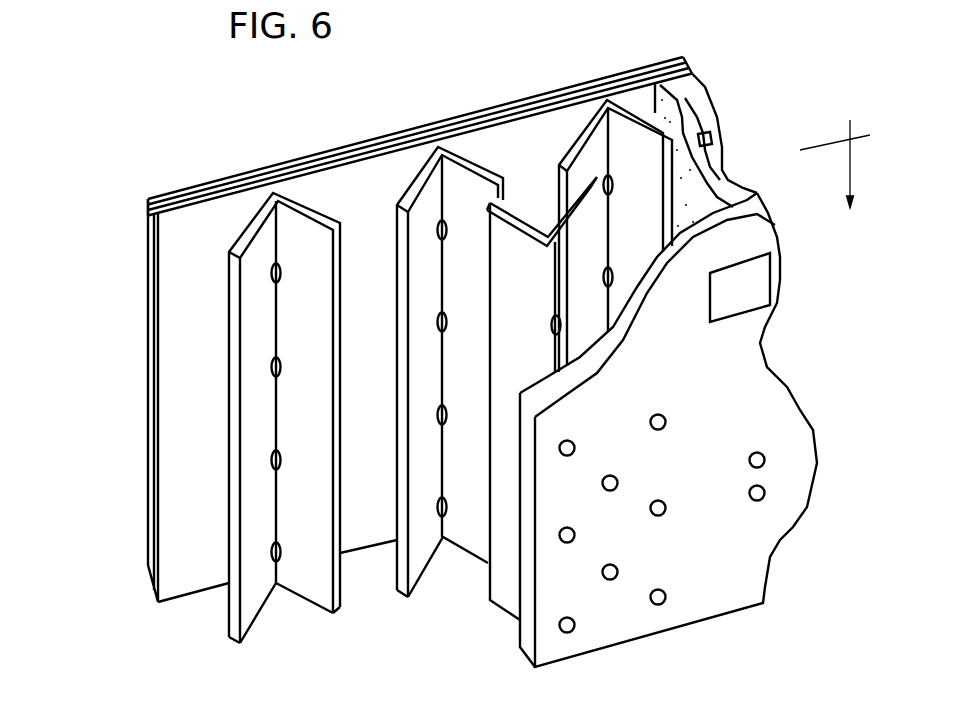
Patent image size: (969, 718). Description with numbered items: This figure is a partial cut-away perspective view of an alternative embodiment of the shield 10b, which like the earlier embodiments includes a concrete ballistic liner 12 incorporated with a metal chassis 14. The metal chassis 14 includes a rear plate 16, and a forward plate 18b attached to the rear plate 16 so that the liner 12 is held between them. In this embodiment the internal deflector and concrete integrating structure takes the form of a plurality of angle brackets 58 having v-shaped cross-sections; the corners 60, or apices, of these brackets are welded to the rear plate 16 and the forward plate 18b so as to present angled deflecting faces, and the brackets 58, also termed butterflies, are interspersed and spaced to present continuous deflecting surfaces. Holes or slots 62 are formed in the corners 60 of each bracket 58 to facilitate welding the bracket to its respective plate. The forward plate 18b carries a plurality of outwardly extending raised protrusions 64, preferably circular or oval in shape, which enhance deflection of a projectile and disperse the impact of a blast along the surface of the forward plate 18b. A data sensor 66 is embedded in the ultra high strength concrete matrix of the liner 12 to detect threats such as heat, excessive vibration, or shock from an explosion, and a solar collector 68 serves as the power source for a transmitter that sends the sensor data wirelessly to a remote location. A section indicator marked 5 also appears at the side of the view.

The shield 10b is at (461, 340).
The metal chassis 14 is at (670, 26).
The concrete ballistic liner 12 is at (736, 138).
The data sensor 66 is at (726, 130).
The section line 5 is at (836, 150).
The solar collector 68 is at (767, 276).
The raised protrusions 64 is at (809, 456).
The forward plate 18b is at (694, 430).
The rear plate 16 is at (182, 333).
The angle brackets 58 is at (238, 216).
The corners 60 is at (245, 185).
The holes or slots 62 is at (280, 248).